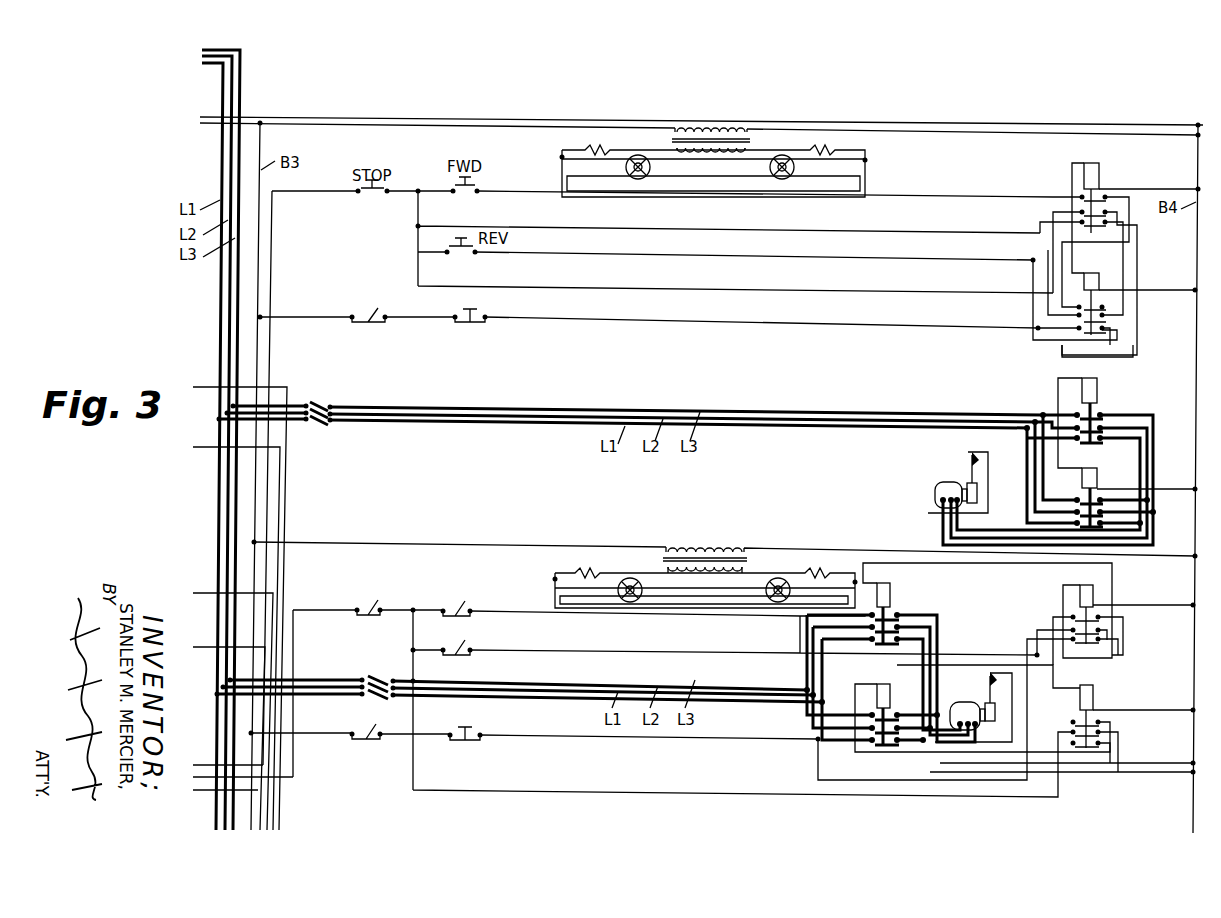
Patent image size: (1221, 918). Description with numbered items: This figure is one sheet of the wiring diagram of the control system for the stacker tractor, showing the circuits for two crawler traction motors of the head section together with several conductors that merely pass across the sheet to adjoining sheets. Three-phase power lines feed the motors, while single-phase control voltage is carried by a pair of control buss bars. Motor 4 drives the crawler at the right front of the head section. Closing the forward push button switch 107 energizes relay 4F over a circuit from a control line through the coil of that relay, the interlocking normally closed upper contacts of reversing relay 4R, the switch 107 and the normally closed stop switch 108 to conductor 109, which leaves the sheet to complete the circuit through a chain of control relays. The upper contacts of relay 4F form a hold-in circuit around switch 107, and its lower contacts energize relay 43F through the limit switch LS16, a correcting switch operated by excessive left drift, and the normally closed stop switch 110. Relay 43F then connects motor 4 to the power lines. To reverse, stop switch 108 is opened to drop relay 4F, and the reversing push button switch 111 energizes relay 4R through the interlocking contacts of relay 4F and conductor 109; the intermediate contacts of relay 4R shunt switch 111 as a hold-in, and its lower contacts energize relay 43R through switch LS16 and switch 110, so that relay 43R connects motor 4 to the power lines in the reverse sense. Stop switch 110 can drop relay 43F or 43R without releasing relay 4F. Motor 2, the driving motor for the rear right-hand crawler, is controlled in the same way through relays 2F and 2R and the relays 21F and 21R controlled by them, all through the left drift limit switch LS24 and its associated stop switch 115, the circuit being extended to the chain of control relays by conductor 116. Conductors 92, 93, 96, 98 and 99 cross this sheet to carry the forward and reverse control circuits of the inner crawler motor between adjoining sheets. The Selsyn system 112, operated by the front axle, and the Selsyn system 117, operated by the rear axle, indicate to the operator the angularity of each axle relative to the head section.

The motor 2 is at (937, 492).
The motor 4 is at (970, 707).
The conductor 92 is at (202, 386).
The conductor 93 is at (203, 446).
The conductor 96 is at (208, 791).
The conductor 98 is at (205, 592).
The conductor 99 is at (205, 646).
The forward push button switch 107 is at (464, 604).
The stop switch 108 is at (380, 604).
The conductor 109 is at (294, 655).
The stop switch 110 is at (378, 730).
The reversing push button switch 111 is at (464, 643).
The Selsyn system 112 is at (745, 585).
The stop switch 115 is at (369, 314).
The conductor 116 is at (272, 250).
The Selsyn system 117 is at (755, 167).
The relay 2F is at (1120, 250).
The relay 2R is at (1115, 303).
The relay 21F is at (1048, 452).
The relay 21R is at (1133, 488).
The relay 43F is at (959, 652).
The relay 43R is at (982, 708).
The relay 4F is at (1124, 617).
The reversing relay 4R is at (1063, 722).
The left drift limit switch LS24 is at (470, 310).
The limit switch LS16 is at (464, 725).